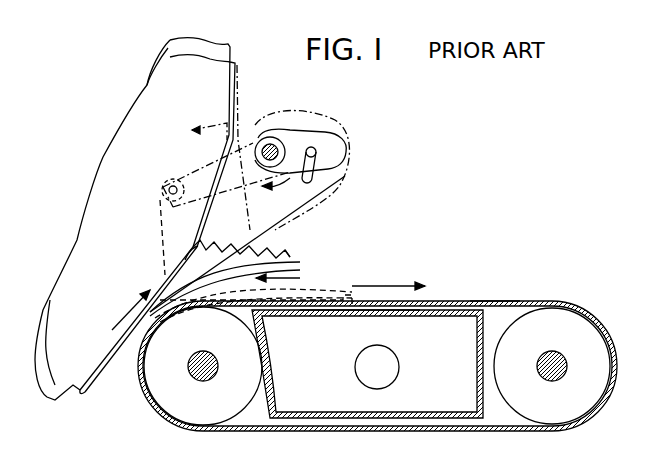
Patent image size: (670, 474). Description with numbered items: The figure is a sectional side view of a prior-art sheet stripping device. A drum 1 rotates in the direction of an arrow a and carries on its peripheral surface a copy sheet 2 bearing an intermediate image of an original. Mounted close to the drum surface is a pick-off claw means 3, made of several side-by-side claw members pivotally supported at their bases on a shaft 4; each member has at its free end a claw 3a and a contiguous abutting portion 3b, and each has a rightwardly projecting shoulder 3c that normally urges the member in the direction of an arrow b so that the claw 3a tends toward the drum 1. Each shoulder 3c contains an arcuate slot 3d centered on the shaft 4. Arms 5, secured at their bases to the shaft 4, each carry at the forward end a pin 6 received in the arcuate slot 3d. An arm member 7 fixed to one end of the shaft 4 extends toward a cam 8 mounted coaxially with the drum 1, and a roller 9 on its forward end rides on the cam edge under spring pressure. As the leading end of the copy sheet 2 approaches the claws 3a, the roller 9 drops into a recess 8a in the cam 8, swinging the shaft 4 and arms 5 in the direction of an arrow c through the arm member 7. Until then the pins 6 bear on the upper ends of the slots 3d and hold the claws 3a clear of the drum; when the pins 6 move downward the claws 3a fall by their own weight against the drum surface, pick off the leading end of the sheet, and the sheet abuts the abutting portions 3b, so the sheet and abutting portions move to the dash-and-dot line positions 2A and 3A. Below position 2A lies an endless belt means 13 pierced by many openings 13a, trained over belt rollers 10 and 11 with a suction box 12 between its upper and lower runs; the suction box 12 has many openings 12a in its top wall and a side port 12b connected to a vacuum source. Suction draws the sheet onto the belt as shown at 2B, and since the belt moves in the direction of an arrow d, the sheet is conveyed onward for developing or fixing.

The drum 1 is at (85, 392).
The copy sheet 2 is at (118, 368).
The dash-and-dot line position of copy sheet 2A is at (235, 300).
The copy sheet attracted to belt 2B is at (347, 298).
The pick-off claw means 3 is at (310, 200).
The claw 3a is at (195, 245).
The abutting portion 3b is at (192, 256).
The dash-and-dot line position of abutting portions 3A is at (291, 257).
The shoulder 3c is at (318, 152).
The arcuate slot 3d is at (315, 180).
The shaft 4 is at (272, 145).
The arms 5 is at (301, 131).
The pin 6 is at (336, 124).
The arm member 7 is at (245, 146).
The cam 8 is at (232, 47).
The recess 8a is at (239, 135).
The roller 9 is at (166, 192).
The belt roller 10 is at (176, 398).
The belt roller 11 is at (590, 324).
The suction box 12 is at (333, 414).
The openings 12a is at (405, 322).
The port 12b is at (392, 370).
The endless belt means 13 is at (560, 302).
The openings 13a is at (507, 301).
The arrow a is at (126, 304).
The arrow b is at (290, 276).
The arrow c is at (290, 180).
The arrow d is at (393, 286).